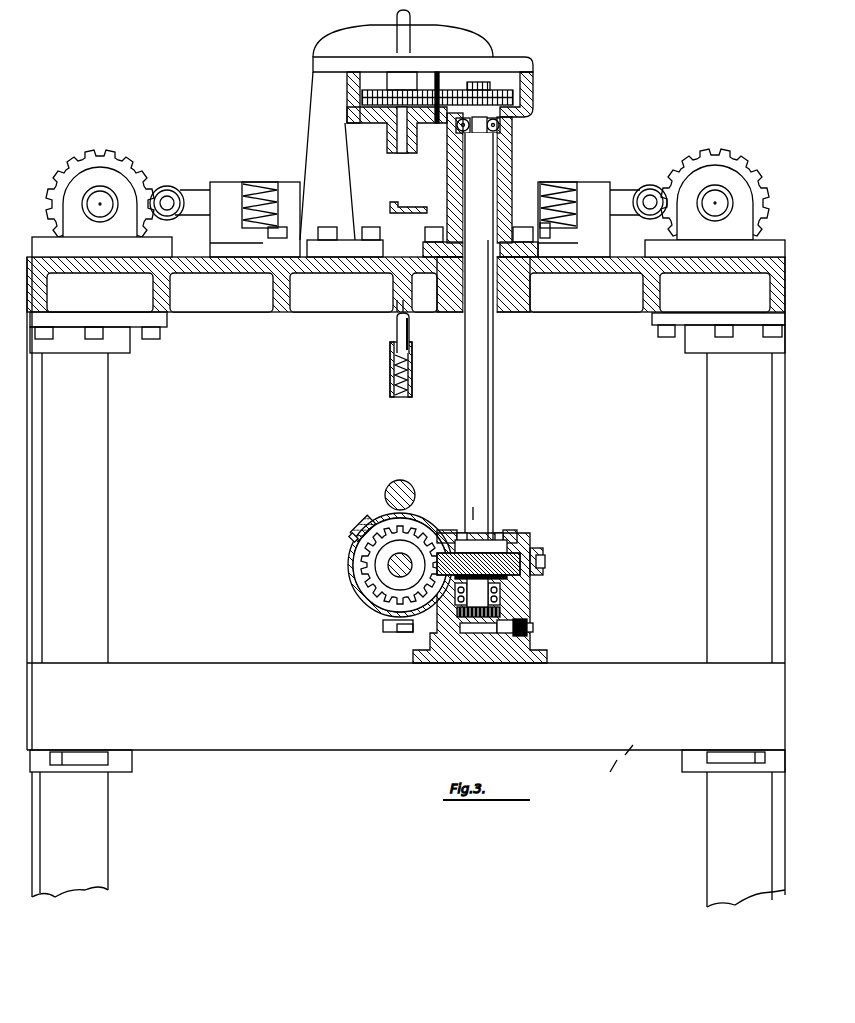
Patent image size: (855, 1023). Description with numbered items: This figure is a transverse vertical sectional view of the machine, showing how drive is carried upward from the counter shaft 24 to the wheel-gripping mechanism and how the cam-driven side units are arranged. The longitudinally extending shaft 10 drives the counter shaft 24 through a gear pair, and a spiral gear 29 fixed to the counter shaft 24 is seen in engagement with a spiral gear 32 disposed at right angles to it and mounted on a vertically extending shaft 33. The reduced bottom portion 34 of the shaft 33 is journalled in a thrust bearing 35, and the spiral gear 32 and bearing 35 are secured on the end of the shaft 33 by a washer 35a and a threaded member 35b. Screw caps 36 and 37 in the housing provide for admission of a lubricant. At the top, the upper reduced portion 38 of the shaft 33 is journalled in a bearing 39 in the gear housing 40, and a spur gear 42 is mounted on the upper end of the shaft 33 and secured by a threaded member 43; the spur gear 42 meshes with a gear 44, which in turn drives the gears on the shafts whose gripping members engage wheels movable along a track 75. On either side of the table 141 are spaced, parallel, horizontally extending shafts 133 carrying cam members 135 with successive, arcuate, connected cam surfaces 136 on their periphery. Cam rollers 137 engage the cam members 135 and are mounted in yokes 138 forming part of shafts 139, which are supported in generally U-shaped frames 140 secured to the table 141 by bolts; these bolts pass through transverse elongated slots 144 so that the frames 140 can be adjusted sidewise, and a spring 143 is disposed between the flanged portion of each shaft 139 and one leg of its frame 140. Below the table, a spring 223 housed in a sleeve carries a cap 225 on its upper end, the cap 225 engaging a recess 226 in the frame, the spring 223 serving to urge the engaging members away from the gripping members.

The longitudinally extending shaft 10 is at (408, 484).
The counter shaft 24 is at (396, 574).
The spiral gear 29 is at (356, 602).
The spiral gear 32 is at (513, 550).
The vertically extending shaft 33 is at (494, 478).
The reduced bottom portion 34 is at (483, 596).
The thrust bearing 35 is at (501, 612).
The washer 35a is at (520, 619).
The threaded member 35b is at (473, 615).
The screw cap 36 is at (353, 522).
The screw cap 37 is at (533, 631).
The upper reduced portion 38 is at (457, 133).
The bearing 39 is at (498, 130).
The gear housing 40 is at (530, 80).
The spur gear 42 is at (507, 90).
The threaded member 43 is at (485, 86).
The gear 44 is at (383, 102).
The track 75 is at (411, 201).
The horizontally extending shaft 133 is at (100, 212).
The cam member 135 is at (115, 161).
The cam surface 136 is at (96, 151).
The cam roller 137 is at (165, 177).
The yoke 138 is at (175, 213).
The shaft 139 is at (202, 195).
The frame 140 is at (220, 184).
The table 141 is at (607, 270).
The spring 143 is at (253, 182).
The elongated slot 144 is at (243, 182).
The spring 223 is at (412, 368).
The cap 225 is at (410, 338).
The recess 226 is at (393, 308).